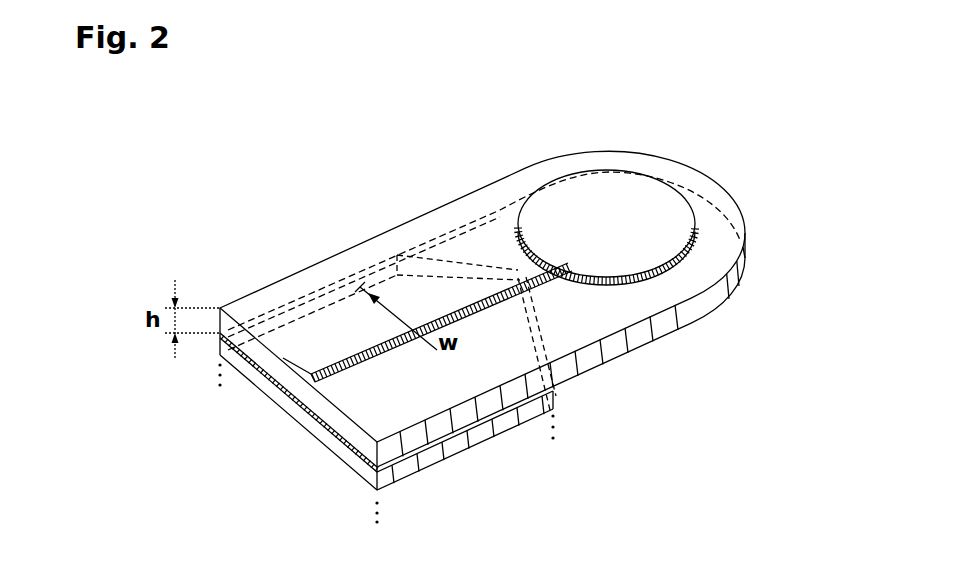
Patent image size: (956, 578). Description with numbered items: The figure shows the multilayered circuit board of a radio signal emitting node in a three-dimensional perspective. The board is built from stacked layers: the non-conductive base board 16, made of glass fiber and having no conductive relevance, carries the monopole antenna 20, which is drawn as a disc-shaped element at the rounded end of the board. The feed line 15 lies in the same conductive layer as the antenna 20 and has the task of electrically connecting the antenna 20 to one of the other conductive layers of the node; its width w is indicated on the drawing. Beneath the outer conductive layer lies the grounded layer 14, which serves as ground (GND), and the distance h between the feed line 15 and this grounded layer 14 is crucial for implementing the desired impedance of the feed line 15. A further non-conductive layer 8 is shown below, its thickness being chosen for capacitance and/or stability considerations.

The non-conductive layer 8 is at (440, 453).
The grounded layer 14 is at (510, 430).
The feed line 15 is at (292, 378).
The non-conductive base board 16 is at (632, 337).
The monopole antenna 20 is at (593, 230).